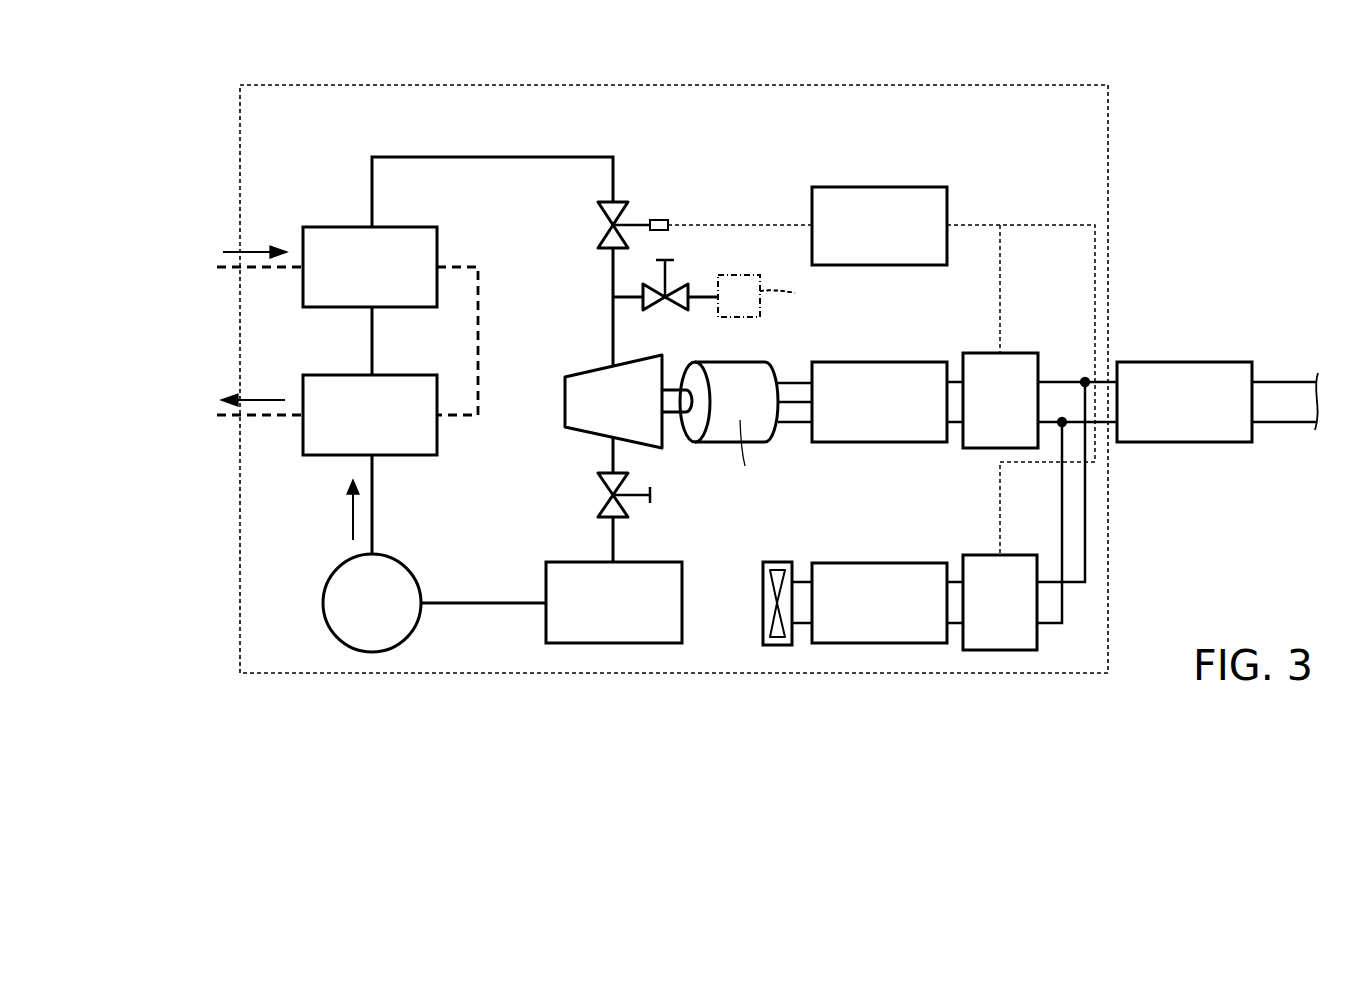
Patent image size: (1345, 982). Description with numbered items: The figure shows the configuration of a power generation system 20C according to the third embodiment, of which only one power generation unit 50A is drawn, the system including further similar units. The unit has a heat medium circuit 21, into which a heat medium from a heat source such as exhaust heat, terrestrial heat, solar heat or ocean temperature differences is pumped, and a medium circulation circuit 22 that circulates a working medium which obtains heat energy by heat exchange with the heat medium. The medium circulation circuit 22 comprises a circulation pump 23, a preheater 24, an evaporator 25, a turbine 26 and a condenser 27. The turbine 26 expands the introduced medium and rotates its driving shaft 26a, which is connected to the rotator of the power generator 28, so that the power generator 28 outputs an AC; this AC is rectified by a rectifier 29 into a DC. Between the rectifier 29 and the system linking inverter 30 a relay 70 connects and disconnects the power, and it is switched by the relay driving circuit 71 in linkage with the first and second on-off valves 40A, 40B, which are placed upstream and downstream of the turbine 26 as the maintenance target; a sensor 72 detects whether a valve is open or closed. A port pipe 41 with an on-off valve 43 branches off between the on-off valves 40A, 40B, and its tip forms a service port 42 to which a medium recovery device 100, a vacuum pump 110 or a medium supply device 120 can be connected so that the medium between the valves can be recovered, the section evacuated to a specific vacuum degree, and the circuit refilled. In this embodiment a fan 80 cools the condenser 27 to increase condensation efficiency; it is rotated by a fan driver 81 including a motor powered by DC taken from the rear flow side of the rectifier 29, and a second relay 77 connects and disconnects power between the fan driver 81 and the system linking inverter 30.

The power generation system 20C is at (1128, 110).
The power generation unit 50A is at (259, 85).
The heat medium circuit 21 is at (218, 268).
The medium circulation circuit 22 is at (421, 157).
The circulation pump 23 is at (410, 569).
The preheater 24 is at (437, 445).
The evaporator 25 is at (437, 237).
The turbine 26 is at (566, 376).
The driving shaft 26a is at (674, 412).
The condenser 27 is at (660, 562).
The power generator 28 is at (766, 362).
The rectifier 29 is at (880, 362).
The system linking inverter 30 is at (1195, 362).
The first on-off valve 40A is at (597, 216).
The second on-off valve 40B is at (597, 497).
The port pipe 41 is at (625, 300).
The service port 42 is at (718, 289).
The on-off valve 43 is at (678, 288).
The relay 70 is at (1020, 353).
The relay driving circuit 71 is at (920, 187).
The sensor 72 is at (658, 219).
The second relay 77 is at (985, 555).
The fan 80 is at (780, 562).
The fan driver 81 is at (885, 563).
The medium recovery device 100 is at (852, 291).
The vacuum pump 110 is at (777, 291).
The medium supply device 120 is at (777, 291).